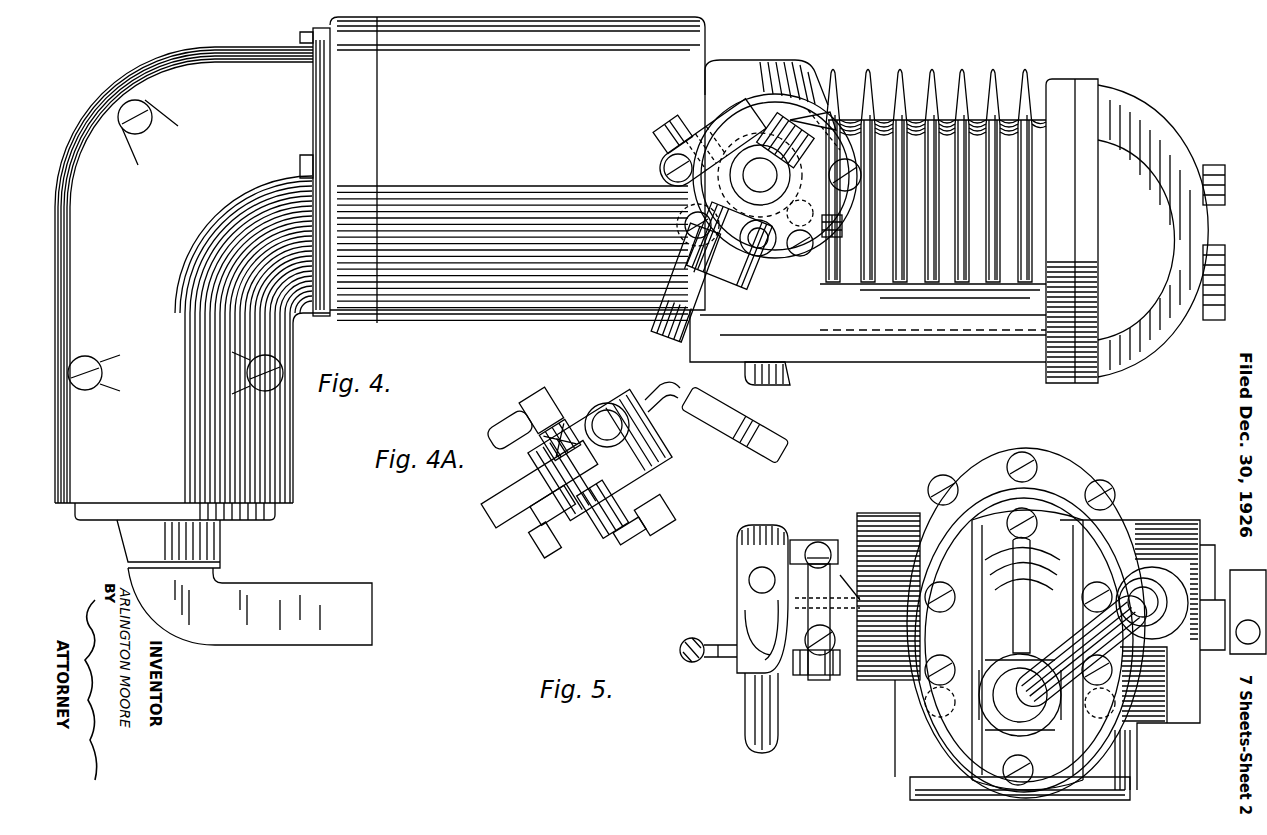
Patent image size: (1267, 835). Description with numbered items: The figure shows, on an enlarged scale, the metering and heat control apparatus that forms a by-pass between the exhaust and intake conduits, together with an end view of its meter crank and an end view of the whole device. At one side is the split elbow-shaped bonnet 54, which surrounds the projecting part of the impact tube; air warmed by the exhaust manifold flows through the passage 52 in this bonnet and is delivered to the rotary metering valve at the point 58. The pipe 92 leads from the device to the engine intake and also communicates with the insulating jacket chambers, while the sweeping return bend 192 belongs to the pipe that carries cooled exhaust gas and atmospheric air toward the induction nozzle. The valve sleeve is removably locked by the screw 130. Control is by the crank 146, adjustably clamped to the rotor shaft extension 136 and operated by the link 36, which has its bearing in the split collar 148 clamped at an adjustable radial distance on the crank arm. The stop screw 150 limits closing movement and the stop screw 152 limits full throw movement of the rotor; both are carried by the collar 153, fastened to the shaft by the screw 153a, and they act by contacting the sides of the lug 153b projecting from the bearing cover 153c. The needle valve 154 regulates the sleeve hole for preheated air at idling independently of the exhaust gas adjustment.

In FIG. 4, the split elbow-shaped bonnet 54 is at (102, 132).
In FIG. 4, the passage 52 is at (525, 317).
In FIG. 4, the delivery point of warmed air 58 is at (365, 632).
In FIG. 4, the screw 130 is at (850, 170).
In FIG. 5, the screw 130 is at (860, 515).
In FIG. 4, the shaft extension 136 is at (690, 205).
In FIG. 4A, the shaft extension 136 is at (548, 548).
In FIG. 4, the crank 146 is at (704, 305).
In FIG. 4A, the crank 146 is at (612, 420).
In FIG. 5, the crank 146 is at (745, 713).
In FIG. 4, the split collar 148 is at (735, 262).
In FIG. 4A, the split collar 148 is at (655, 447).
In FIG. 4, the stop screw 150 is at (843, 240).
In FIG. 4A, the stop screw 150 is at (668, 532).
In FIG. 5, the stop screw 150 is at (815, 660).
In FIG. 4, the stop screw 152 is at (668, 125).
In FIG. 4A, the stop screw 152 is at (508, 415).
In FIG. 4, the collar 153 is at (755, 150).
In FIG. 4A, the collar 153 is at (560, 430).
In FIG. 5, the collar 153 is at (795, 560).
In FIG. 4, the screw 153a is at (838, 100).
In FIG. 5, the screw 153a is at (822, 543).
In FIG. 4, the lug 153b is at (795, 215).
In FIG. 4A, the lug 153b is at (530, 500).
In FIG. 5, the lug 153b is at (838, 610).
In FIG. 4, the bearing cover 153c is at (720, 176).
In FIG. 4A, the bearing cover 153c is at (605, 535).
In FIG. 5, the bearing cover 153c is at (822, 655).
In FIG. 4, the needle valve 154 is at (760, 60).
In FIG. 4A, the link 36 is at (775, 443).
In FIG. 5, the link 36 is at (680, 646).
In FIG. 4, the pipe 92 is at (793, 380).
In FIG. 5, the return bend 192 is at (1162, 690).